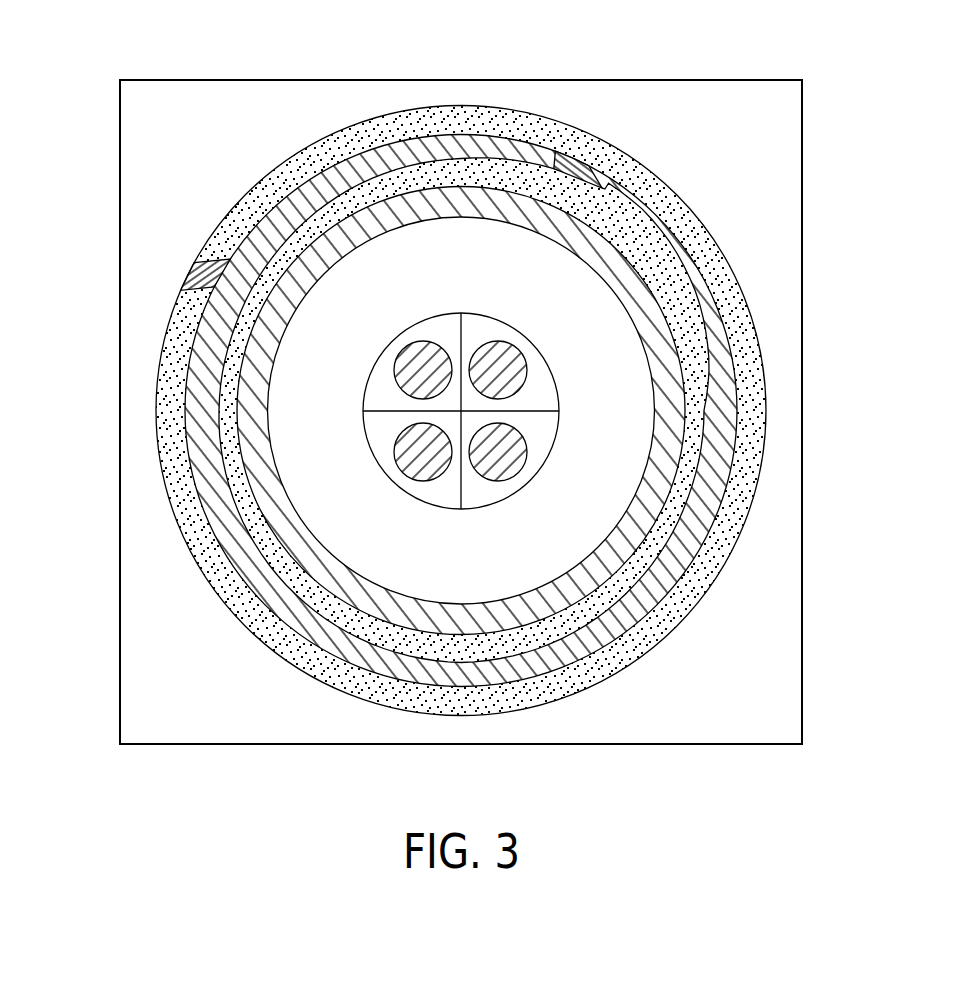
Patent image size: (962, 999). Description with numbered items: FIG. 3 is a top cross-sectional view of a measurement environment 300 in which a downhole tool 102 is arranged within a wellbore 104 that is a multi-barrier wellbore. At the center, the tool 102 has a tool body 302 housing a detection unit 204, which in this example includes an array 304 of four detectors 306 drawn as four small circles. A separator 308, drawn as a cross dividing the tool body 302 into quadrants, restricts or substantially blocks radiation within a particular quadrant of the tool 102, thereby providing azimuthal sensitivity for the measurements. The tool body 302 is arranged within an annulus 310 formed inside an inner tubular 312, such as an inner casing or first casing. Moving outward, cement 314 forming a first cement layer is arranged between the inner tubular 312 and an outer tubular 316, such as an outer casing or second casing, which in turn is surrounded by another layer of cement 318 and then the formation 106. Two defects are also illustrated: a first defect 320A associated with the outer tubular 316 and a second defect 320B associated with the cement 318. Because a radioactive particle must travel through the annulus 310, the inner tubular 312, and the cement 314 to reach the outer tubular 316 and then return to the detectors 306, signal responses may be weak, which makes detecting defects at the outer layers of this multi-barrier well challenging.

The measurement environment 300 is at (88, 130).
The formation 106 is at (700, 105).
The wellbore 104 is at (750, 222).
The cement 318 is at (510, 410).
The second defect 320B is at (204, 275).
The first defect 320A is at (585, 165).
The cement 314 is at (461, 362).
The outer tubular 316 is at (633, 208).
The inner tubular 312 is at (322, 574).
The annulus 310 is at (599, 405).
The array 304 is at (464, 405).
The downhole tool 102 is at (486, 405).
The detection unit 204 is at (486, 410).
The tool body 302 is at (530, 482).
The separator 308 is at (457, 333).
The detectors 306 is at (418, 372).